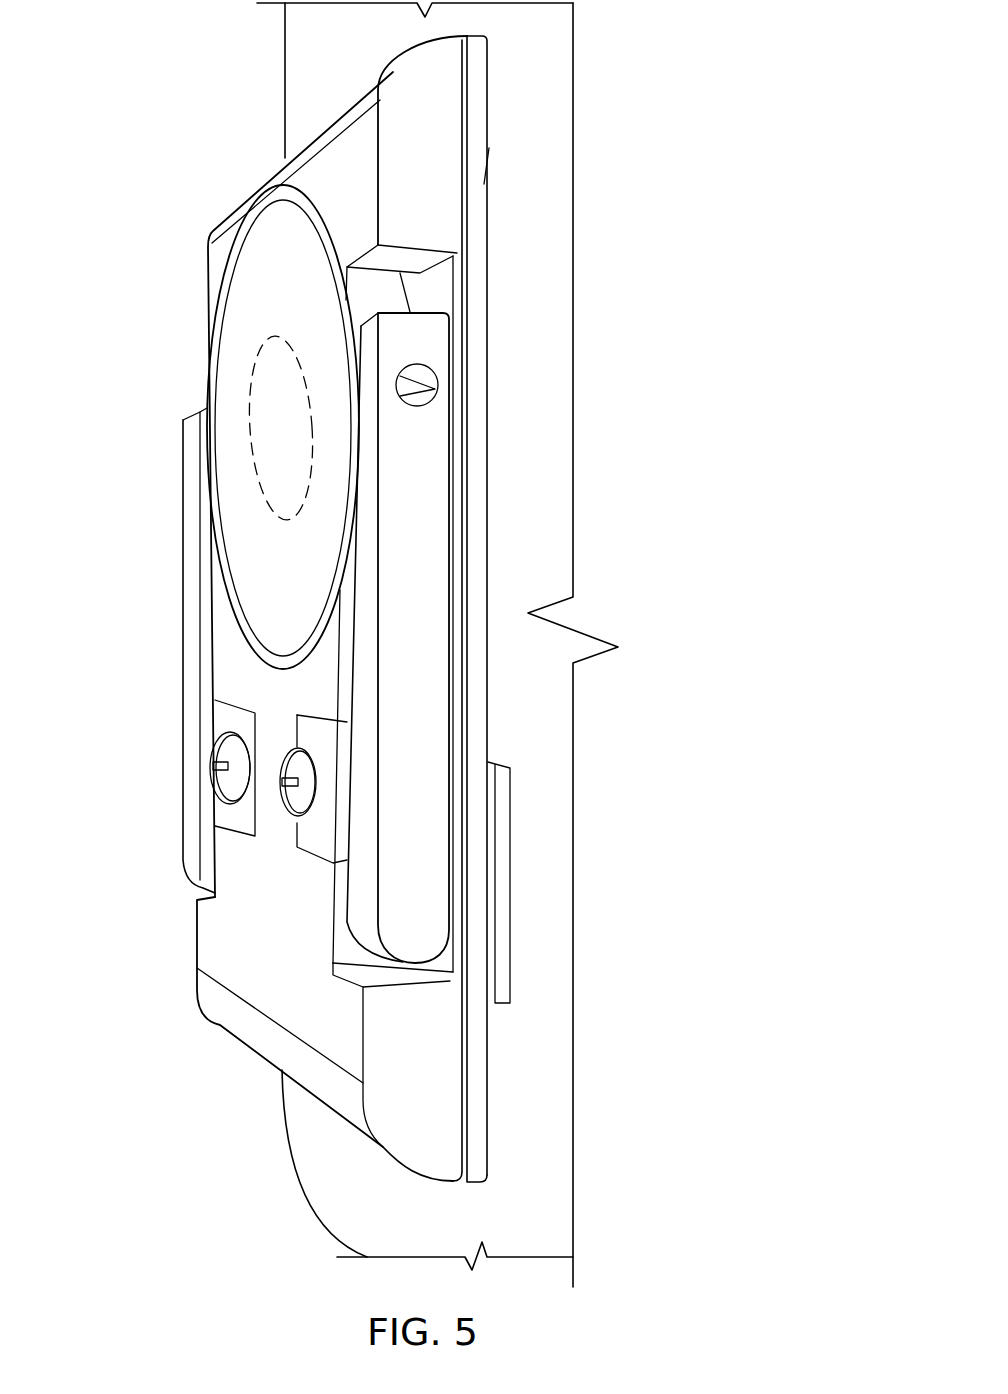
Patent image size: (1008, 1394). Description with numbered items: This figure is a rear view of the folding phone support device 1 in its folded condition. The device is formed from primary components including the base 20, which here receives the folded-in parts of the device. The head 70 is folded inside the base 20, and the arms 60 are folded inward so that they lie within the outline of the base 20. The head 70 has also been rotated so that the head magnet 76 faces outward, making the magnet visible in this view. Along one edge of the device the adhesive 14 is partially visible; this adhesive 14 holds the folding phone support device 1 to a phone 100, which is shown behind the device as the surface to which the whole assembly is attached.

The folding phone support device 1 is at (110, 195).
The adhesive 14 is at (492, 160).
The base 20 is at (428, 198).
The arms 60 is at (420, 490).
The head 70 is at (262, 311).
The head magnet 76 is at (273, 463).
The phone 100 is at (537, 757).